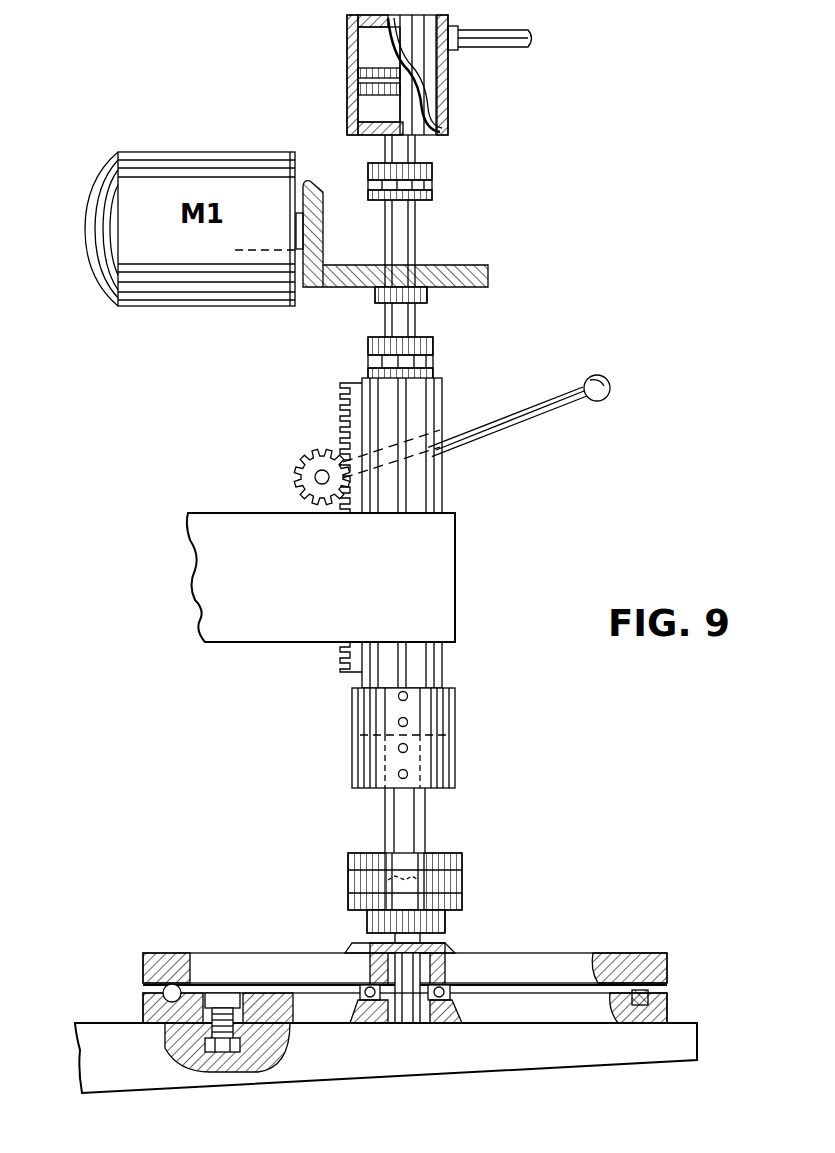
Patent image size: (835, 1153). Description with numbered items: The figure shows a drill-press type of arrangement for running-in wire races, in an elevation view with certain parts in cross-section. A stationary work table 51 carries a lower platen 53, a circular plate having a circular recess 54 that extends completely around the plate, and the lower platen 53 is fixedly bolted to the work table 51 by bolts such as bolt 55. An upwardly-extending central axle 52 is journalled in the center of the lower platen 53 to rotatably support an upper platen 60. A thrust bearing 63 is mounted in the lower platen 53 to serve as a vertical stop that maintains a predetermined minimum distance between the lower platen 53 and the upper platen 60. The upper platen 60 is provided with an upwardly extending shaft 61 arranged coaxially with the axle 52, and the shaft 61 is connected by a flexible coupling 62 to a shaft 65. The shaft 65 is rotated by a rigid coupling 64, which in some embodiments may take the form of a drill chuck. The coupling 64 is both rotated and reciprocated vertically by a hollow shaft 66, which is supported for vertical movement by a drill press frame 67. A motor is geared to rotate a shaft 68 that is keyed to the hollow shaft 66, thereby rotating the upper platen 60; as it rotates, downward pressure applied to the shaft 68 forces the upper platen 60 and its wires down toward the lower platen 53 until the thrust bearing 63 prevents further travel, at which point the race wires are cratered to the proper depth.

The stationary work table 51 is at (572, 1050).
The central axle 52 is at (402, 1024).
The lower platen 53 is at (590, 1010).
The circular recess 54 is at (166, 1028).
The bolt 55 is at (222, 1053).
The upper platen 60 is at (552, 960).
The upwardly extending shaft 61 is at (422, 938).
The flexible coupling 62 is at (459, 866).
The thrust bearing 63 is at (444, 1024).
The rigid coupling 64 is at (440, 742).
The shaft 65 is at (410, 840).
The hollow shaft 66 is at (428, 676).
The drill press frame 67 is at (456, 583).
The shaft 68 is at (416, 230).